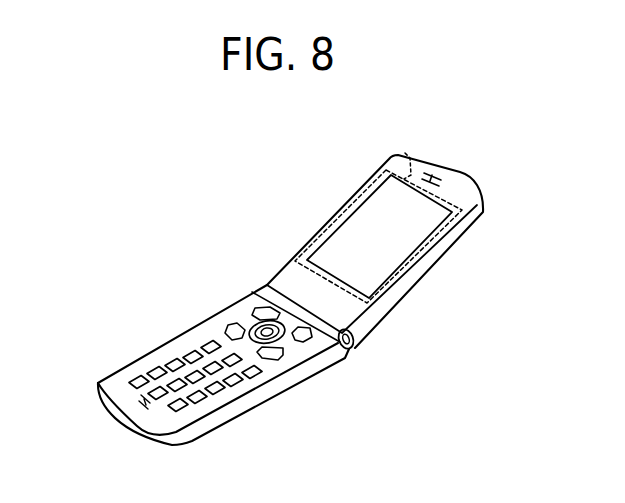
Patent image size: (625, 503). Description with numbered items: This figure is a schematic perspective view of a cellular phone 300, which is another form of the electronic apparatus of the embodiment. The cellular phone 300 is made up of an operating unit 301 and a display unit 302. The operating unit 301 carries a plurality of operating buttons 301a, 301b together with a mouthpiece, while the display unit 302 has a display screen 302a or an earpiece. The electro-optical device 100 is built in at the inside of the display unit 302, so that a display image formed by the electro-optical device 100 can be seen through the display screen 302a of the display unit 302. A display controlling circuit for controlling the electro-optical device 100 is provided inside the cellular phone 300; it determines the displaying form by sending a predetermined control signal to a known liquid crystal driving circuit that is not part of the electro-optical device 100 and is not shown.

The cellular phone 300 is at (188, 122).
The electro-optical device 100 is at (405, 153).
The operating unit 301 is at (160, 352).
The operating button 301a is at (243, 372).
The operating button 301b is at (333, 363).
The display unit 302 is at (431, 264).
The display screen 302a is at (358, 238).